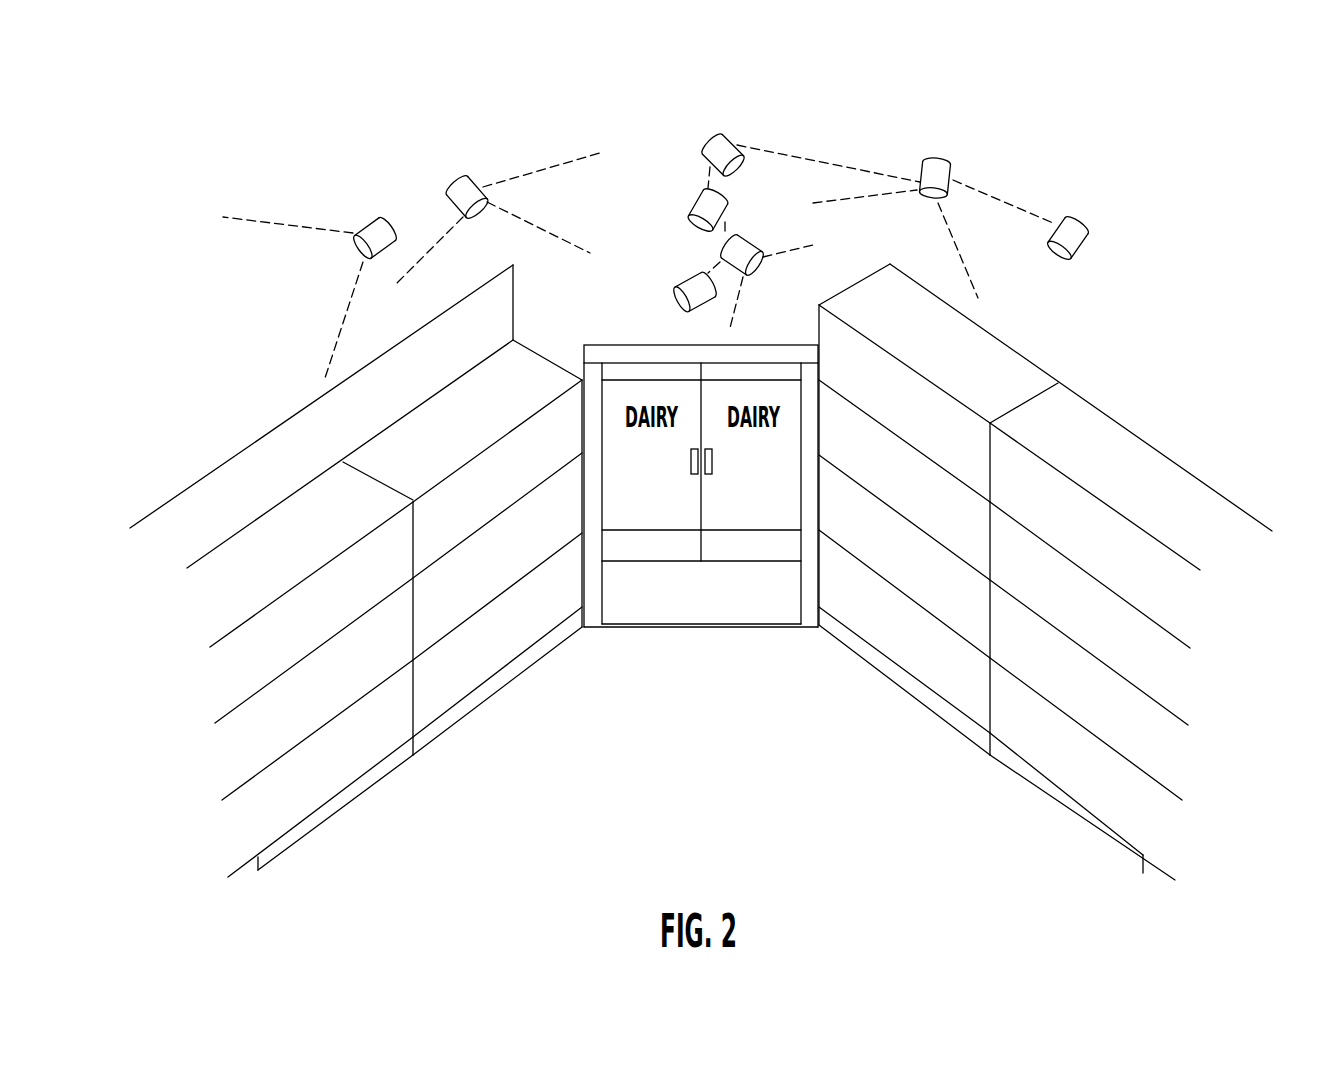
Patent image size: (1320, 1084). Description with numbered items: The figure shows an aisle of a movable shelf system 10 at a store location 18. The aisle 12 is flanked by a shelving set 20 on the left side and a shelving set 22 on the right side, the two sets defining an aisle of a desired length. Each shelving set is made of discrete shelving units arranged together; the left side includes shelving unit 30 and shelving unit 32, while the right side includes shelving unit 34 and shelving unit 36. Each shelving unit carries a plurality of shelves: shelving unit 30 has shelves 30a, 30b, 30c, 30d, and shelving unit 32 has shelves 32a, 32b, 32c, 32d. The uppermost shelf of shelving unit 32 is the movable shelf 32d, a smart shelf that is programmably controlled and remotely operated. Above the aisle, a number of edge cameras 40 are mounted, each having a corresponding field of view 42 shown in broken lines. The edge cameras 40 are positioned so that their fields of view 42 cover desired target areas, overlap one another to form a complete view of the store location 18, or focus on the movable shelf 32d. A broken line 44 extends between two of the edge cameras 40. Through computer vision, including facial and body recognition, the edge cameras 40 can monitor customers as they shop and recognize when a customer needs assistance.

The movable shelf system 10 is at (1064, 86).
The aisle 12 is at (703, 753).
The store location 18 is at (1002, 158).
The shelving set 20 is at (455, 812).
The shelving set 22 is at (947, 780).
The shelving unit 30 is at (353, 842).
The shelf 30a is at (303, 822).
The shelf 30b is at (287, 757).
The shelf 30c is at (260, 697).
The shelf 30d is at (262, 612).
The shelving unit 32 is at (520, 694).
The shelf 32a is at (547, 633).
The shelf 32b is at (465, 622).
The shelf 32c is at (455, 557).
The movable shelf 32d is at (442, 483).
The shelving unit 34 is at (1058, 830).
The shelving unit 36 is at (885, 689).
The edge camera 40 is at (375, 215).
The field of view 42 is at (350, 310).
The camera communication link 44 is at (1015, 205).